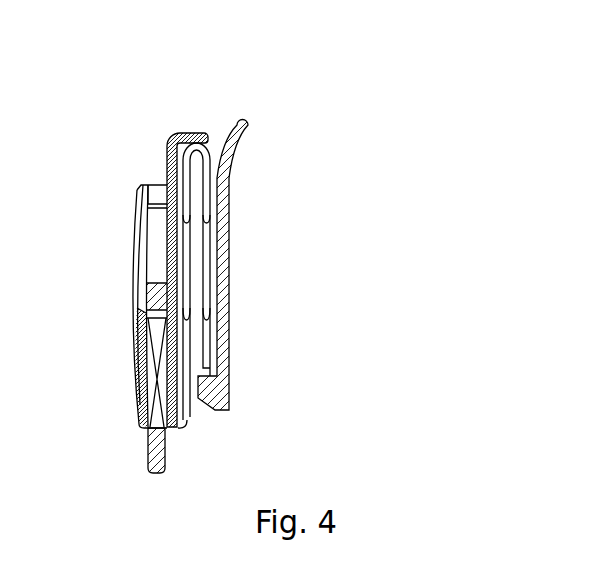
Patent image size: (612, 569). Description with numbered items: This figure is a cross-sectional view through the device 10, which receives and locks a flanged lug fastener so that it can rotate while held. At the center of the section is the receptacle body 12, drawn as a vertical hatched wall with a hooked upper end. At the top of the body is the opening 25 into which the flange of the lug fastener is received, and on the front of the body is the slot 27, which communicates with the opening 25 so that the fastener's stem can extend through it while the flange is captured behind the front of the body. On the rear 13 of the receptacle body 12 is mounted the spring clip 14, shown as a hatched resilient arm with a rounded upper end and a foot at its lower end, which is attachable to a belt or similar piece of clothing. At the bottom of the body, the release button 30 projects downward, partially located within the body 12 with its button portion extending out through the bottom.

The device 10 is at (215, 73).
The receptacle body 12 is at (136, 340).
The rear 13 is at (177, 300).
The spring clip 14 is at (257, 200).
The opening 25 is at (153, 183).
The slot 27 is at (133, 258).
The release button 30 is at (148, 467).